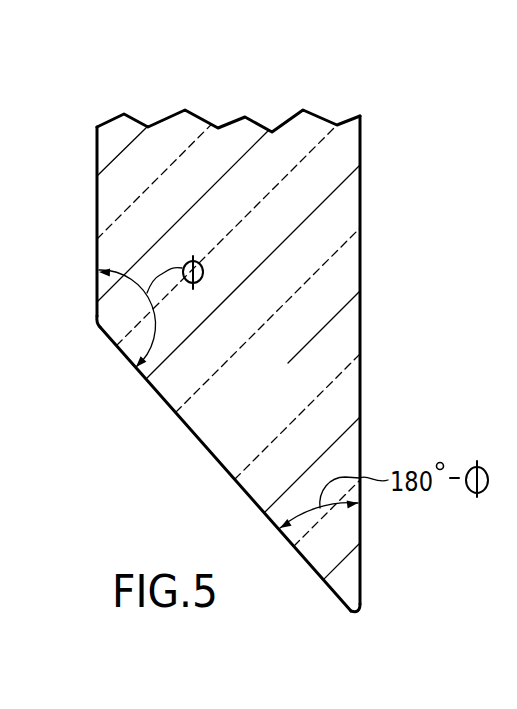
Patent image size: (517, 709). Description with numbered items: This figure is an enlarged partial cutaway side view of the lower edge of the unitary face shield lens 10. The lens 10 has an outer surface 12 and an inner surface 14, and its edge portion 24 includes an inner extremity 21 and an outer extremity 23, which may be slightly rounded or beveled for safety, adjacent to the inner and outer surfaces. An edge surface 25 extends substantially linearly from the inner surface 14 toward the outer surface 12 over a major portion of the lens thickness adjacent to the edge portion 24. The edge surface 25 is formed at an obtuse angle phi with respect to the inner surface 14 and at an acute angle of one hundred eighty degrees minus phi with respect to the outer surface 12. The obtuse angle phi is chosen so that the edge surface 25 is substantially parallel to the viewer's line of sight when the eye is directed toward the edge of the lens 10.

The face shield lens 10 is at (245, 102).
The outer surface 12 is at (362, 197).
The inner surface 14 is at (97, 200).
The inner extremity 21 is at (97, 326).
The outer extremity 23 is at (354, 616).
The edge portion 24 is at (216, 432).
The edge surface 25 is at (220, 465).